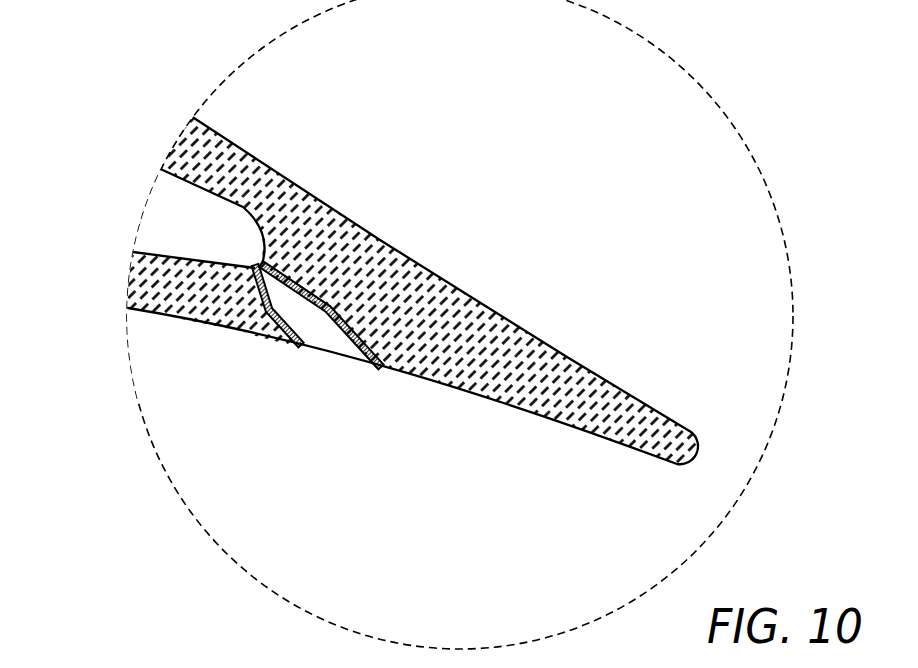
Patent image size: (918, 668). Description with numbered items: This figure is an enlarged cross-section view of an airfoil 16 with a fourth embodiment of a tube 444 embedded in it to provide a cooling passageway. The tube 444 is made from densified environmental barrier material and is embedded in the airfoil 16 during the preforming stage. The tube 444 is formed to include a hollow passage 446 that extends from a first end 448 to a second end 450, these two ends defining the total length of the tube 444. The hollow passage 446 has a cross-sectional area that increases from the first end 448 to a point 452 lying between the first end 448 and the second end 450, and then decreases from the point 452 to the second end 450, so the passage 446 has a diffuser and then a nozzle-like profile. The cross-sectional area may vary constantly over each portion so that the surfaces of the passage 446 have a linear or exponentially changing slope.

The airfoil 16 is at (570, 212).
The tube 444 is at (378, 382).
The hollow passage 446 is at (251, 251).
The first end 448 is at (257, 271).
The second end 450 is at (297, 345).
The point 452 is at (277, 310).